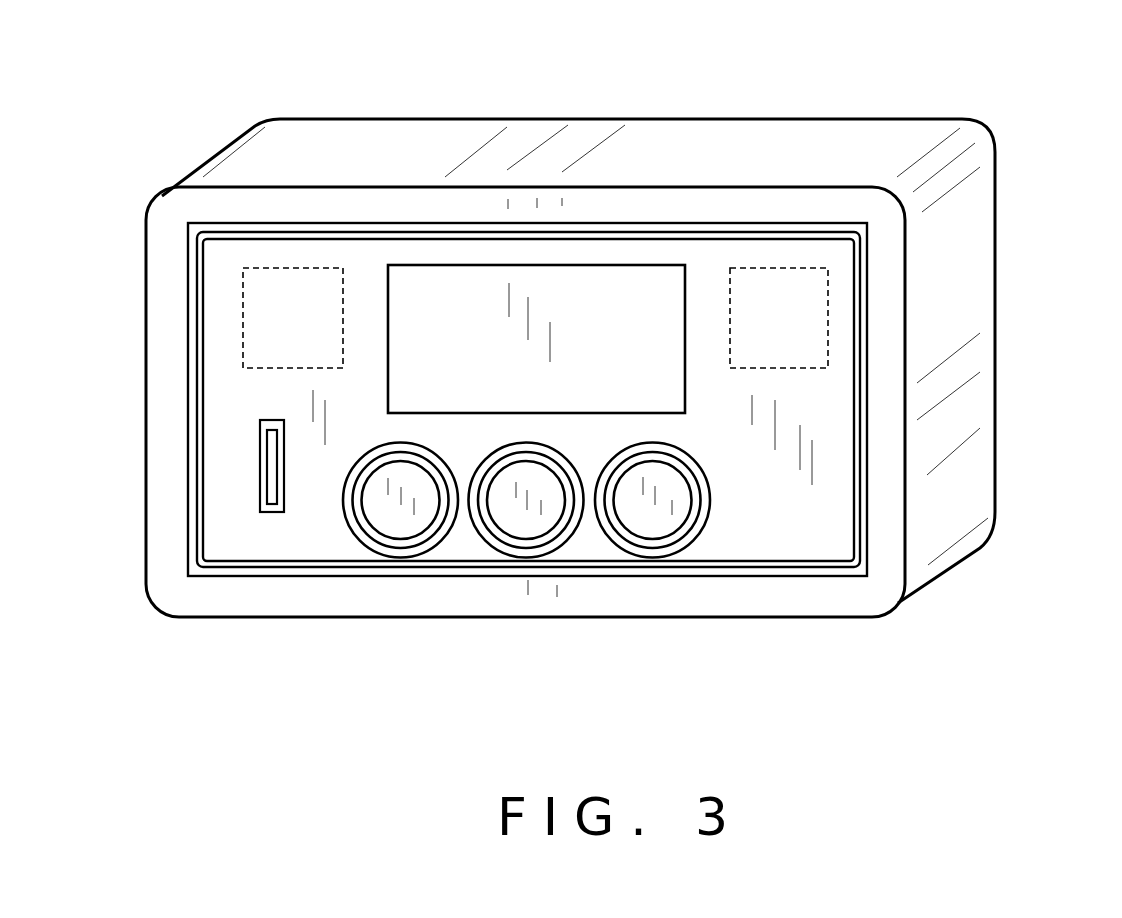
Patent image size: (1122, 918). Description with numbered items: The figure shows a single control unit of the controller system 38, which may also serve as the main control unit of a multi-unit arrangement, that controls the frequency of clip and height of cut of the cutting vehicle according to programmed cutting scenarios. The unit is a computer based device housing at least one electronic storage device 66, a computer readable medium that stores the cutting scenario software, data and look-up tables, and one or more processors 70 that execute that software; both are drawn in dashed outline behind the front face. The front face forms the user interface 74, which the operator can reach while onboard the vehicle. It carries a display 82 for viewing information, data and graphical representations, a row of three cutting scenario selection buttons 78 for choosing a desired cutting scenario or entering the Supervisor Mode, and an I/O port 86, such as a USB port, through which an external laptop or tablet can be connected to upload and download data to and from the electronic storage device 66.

The controller system 38 is at (628, 163).
The electronic storage device 66 is at (305, 268).
The processor 70 is at (780, 268).
The user interface 74 is at (823, 523).
The cutting scenario selection buttons 78 is at (565, 559).
The display 82 is at (472, 307).
The I/O port 86 is at (258, 460).